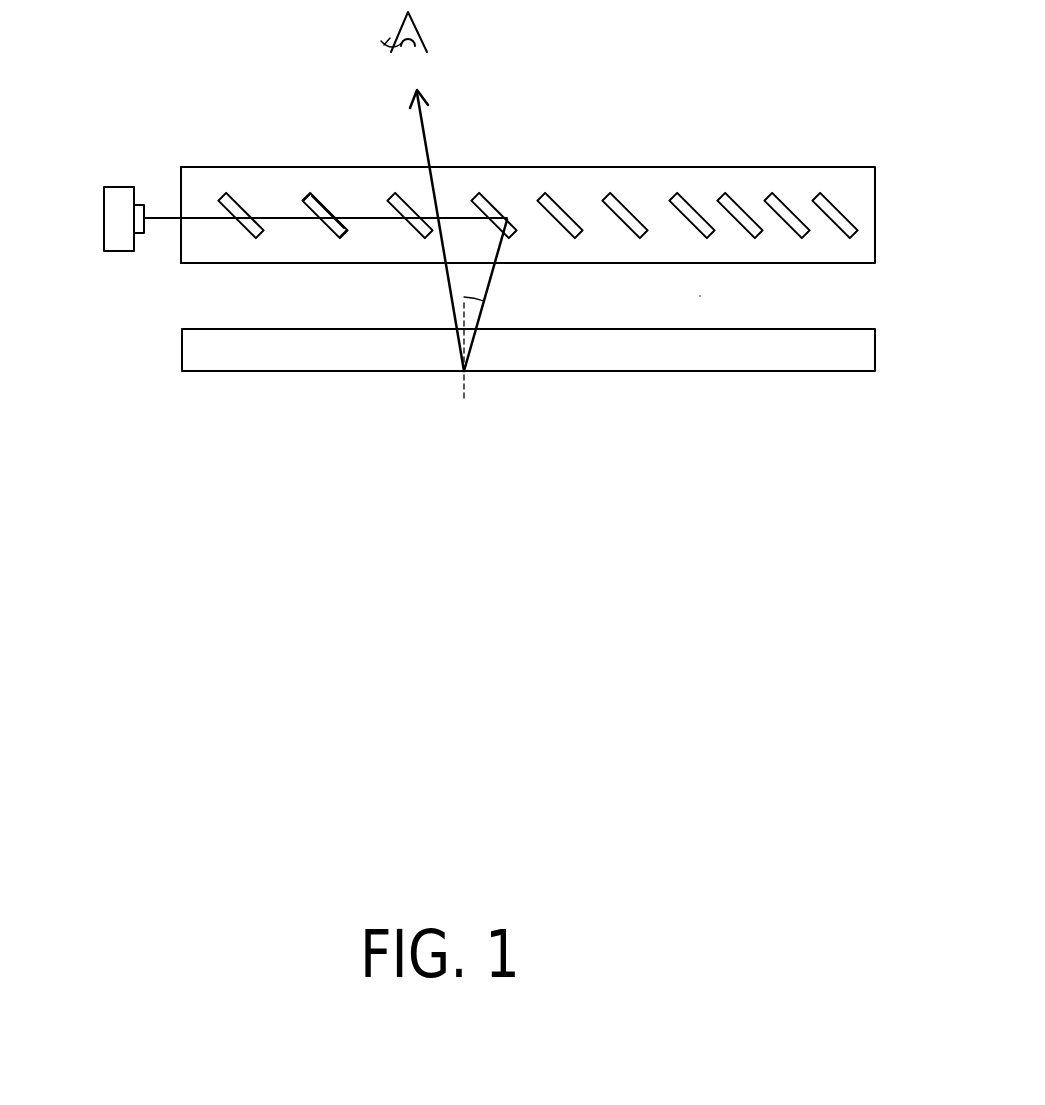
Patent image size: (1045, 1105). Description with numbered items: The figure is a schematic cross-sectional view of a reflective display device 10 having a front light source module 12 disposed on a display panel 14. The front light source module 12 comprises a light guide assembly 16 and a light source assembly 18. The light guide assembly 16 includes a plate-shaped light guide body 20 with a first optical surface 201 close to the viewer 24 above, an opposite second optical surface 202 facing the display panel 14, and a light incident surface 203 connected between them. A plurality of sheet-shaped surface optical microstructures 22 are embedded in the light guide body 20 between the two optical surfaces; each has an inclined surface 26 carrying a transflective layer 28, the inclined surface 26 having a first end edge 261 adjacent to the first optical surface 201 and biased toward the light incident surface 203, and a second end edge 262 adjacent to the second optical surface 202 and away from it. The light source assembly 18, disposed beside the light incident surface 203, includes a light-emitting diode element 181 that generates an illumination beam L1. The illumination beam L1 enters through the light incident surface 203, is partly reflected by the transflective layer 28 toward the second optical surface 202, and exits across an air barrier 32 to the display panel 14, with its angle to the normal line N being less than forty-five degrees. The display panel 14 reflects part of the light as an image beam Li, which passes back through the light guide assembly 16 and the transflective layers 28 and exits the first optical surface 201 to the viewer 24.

The reflective display device 10 is at (66, 50).
The front light source module 12 is at (151, 182).
The display panel 14 is at (205, 373).
The light guide assembly 16 is at (201, 166).
The light source assembly 18 is at (118, 186).
The light-emitting diode element 181 is at (140, 233).
The light guide body 20 is at (863, 238).
The first optical surface 201 is at (623, 167).
The second optical surface 202 is at (625, 263).
The light incident surface 203 is at (180, 248).
The surface optical microstructure 22 is at (227, 230).
The viewer 24 is at (413, 25).
The inclined surface 26 is at (331, 228).
The first end edge 261 is at (306, 198).
The second end edge 262 is at (338, 239).
The transflective layer 28 is at (325, 205).
The air barrier 32 is at (863, 298).
The illumination beam L1 is at (280, 217).
The image beam Li is at (425, 137).
The normal line N is at (468, 387).